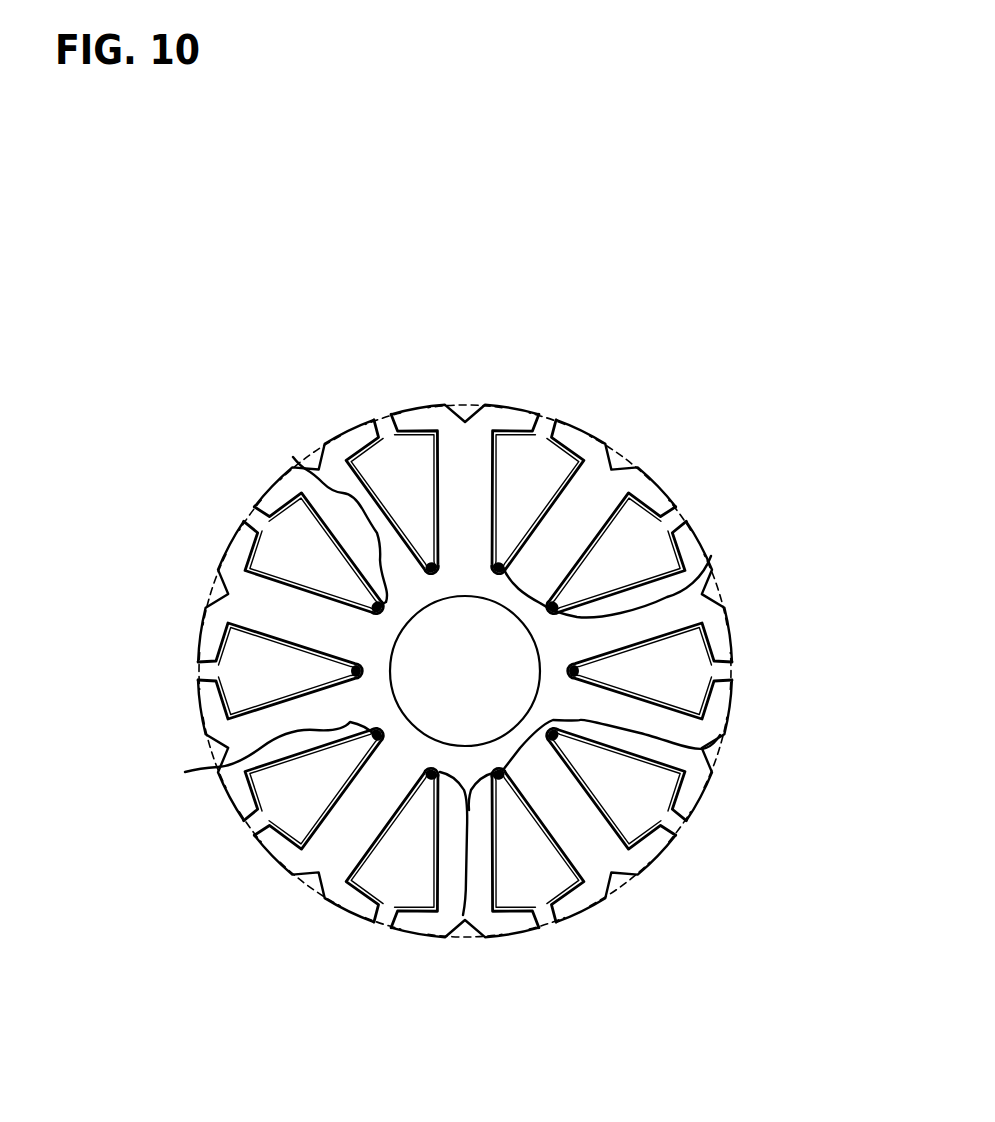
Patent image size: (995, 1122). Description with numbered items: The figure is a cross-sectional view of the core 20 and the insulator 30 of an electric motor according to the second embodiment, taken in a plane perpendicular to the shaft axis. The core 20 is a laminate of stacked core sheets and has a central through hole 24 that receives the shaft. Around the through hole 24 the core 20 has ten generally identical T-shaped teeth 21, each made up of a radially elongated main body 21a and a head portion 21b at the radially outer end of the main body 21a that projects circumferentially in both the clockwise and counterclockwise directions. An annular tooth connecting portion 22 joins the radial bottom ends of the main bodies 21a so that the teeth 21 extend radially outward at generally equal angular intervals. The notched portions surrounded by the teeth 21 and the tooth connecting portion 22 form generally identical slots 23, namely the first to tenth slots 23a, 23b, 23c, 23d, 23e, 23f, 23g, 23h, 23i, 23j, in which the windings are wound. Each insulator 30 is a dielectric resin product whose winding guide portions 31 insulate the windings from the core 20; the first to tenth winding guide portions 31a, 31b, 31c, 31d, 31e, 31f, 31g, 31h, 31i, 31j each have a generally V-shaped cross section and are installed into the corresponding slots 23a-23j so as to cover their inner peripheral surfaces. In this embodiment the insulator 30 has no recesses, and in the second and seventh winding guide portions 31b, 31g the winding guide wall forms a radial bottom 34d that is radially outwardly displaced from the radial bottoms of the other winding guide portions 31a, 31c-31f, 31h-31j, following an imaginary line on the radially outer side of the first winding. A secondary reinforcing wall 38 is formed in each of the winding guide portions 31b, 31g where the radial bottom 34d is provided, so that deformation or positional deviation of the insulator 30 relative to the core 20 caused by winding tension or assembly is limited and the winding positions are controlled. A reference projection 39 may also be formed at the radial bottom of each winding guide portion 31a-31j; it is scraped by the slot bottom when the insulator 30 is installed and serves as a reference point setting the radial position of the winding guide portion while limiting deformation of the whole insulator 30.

The core 20 is at (173, 260).
The tooth 21 is at (497, 872).
The main body 21a is at (490, 862).
The head portion 21b is at (420, 925).
The tooth connecting portion 22 is at (647, 725).
The slot 23 is at (390, 433).
The first slot 23a is at (545, 445).
The second slot 23b is at (660, 527).
The third slot 23c is at (680, 700).
The fourth slot 23d is at (603, 800).
The fifth slot 23e is at (485, 863).
The sixth slot 23f is at (403, 860).
The seventh slot 23g is at (290, 815).
The eighth slot 23h is at (265, 652).
The ninth slot 23i is at (337, 532).
The tenth slot 23j is at (384, 570).
The through hole 24 is at (497, 722).
The insulator 30 is at (210, 720).
The winding guide portion 31 is at (357, 675).
The first winding guide portion 31a is at (496, 528).
The second winding guide portion 31b is at (560, 625).
The third winding guide portion 31c is at (590, 655).
The fourth winding guide portion 31d is at (560, 768).
The fifth winding guide portion 31e is at (527, 790).
The sixth winding guide portion 31f is at (393, 827).
The seventh winding guide portion 31g is at (248, 792).
The eighth winding guide portion 31h is at (323, 683).
The ninth winding guide portion 31i is at (387, 593).
The tenth winding guide portion 31j is at (437, 510).
The radial bottom 34d is at (583, 587).
The secondary reinforcing wall 38 is at (707, 562).
The reference projection 39 is at (293, 457).